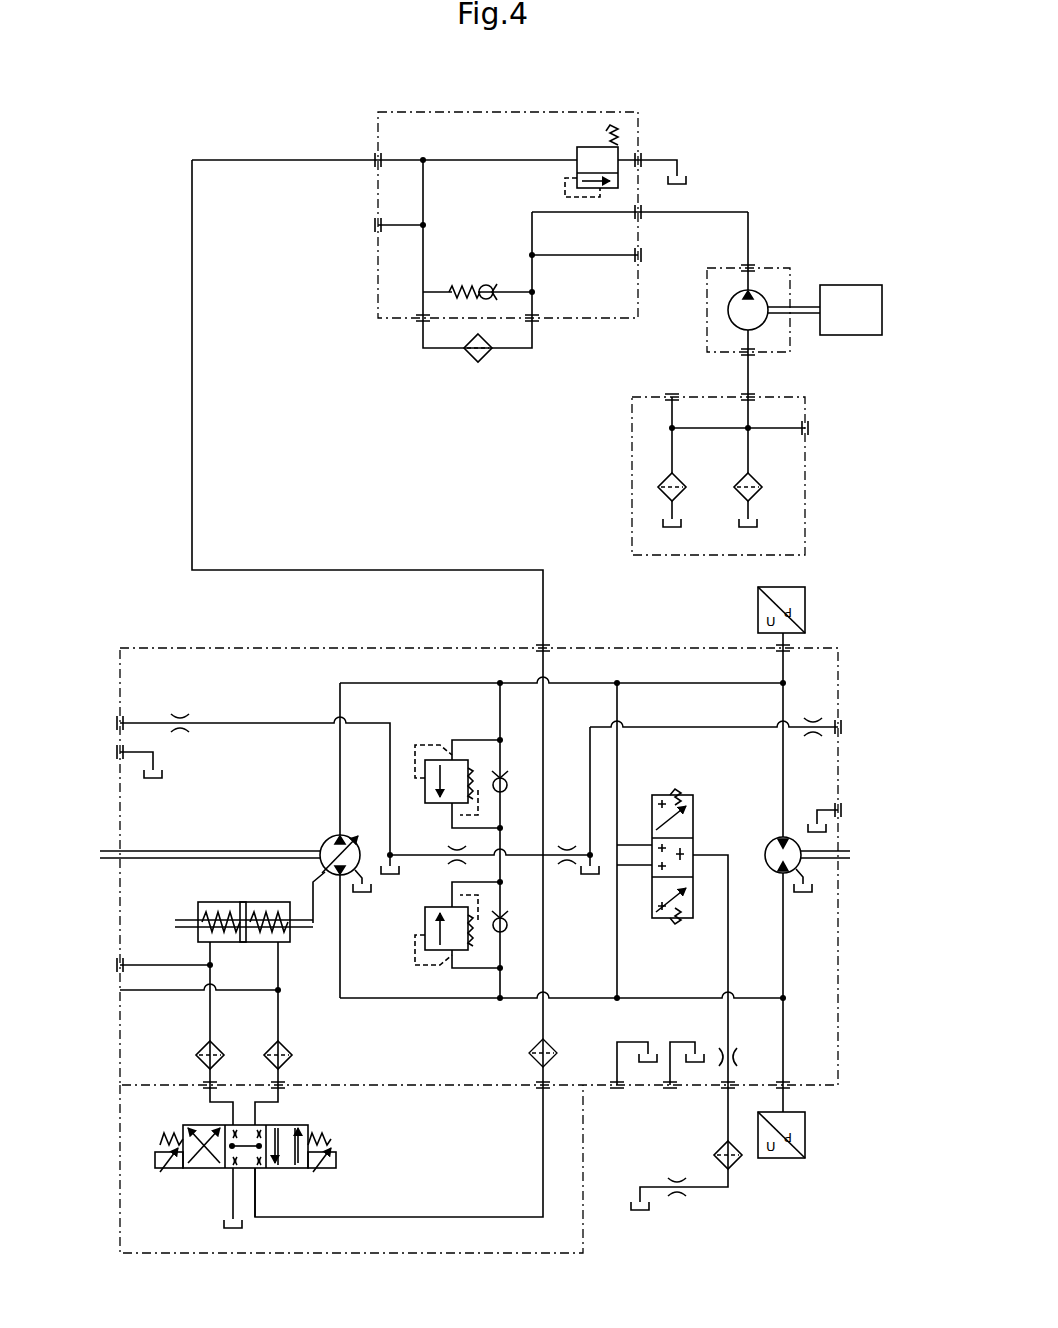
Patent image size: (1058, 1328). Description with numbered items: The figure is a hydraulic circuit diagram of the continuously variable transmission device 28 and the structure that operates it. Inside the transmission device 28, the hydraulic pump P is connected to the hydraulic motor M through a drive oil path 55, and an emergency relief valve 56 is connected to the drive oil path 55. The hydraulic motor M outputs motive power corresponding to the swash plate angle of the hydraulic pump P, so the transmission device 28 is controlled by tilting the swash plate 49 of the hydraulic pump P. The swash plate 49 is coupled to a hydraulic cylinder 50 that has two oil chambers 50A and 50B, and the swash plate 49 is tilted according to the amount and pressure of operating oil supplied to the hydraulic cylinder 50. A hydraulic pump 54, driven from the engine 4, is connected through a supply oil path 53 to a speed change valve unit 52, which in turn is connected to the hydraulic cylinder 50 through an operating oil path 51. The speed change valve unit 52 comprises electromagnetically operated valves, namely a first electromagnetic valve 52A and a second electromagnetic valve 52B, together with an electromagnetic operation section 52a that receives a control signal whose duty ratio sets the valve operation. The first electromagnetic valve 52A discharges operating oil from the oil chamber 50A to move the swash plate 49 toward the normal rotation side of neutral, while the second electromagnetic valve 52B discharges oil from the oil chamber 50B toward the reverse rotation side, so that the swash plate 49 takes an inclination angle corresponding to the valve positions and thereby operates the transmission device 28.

The engine 4 is at (848, 335).
The continuously variable transmission device 28 is at (175, 648).
The swash plate 49 is at (239, 847).
The hydraulic cylinder 50 is at (229, 924).
The oil chamber 50A is at (292, 942).
The oil chamber 50B is at (200, 948).
The operating oil path 51 is at (208, 1018).
The speed change valve unit 52 is at (237, 1163).
The first electromagnetic valve 52A is at (288, 1123).
The second electromagnetic valve 52B is at (202, 1123).
The electromagnetic operation section 52a is at (155, 1160).
The supply oil path 53 is at (366, 569).
The hydraulic pump 54 is at (763, 293).
The drive oil path 55 is at (680, 683).
The emergency relief valve 56 is at (694, 818).
The hydraulic pump P is at (327, 842).
The hydraulic motor M is at (770, 838).